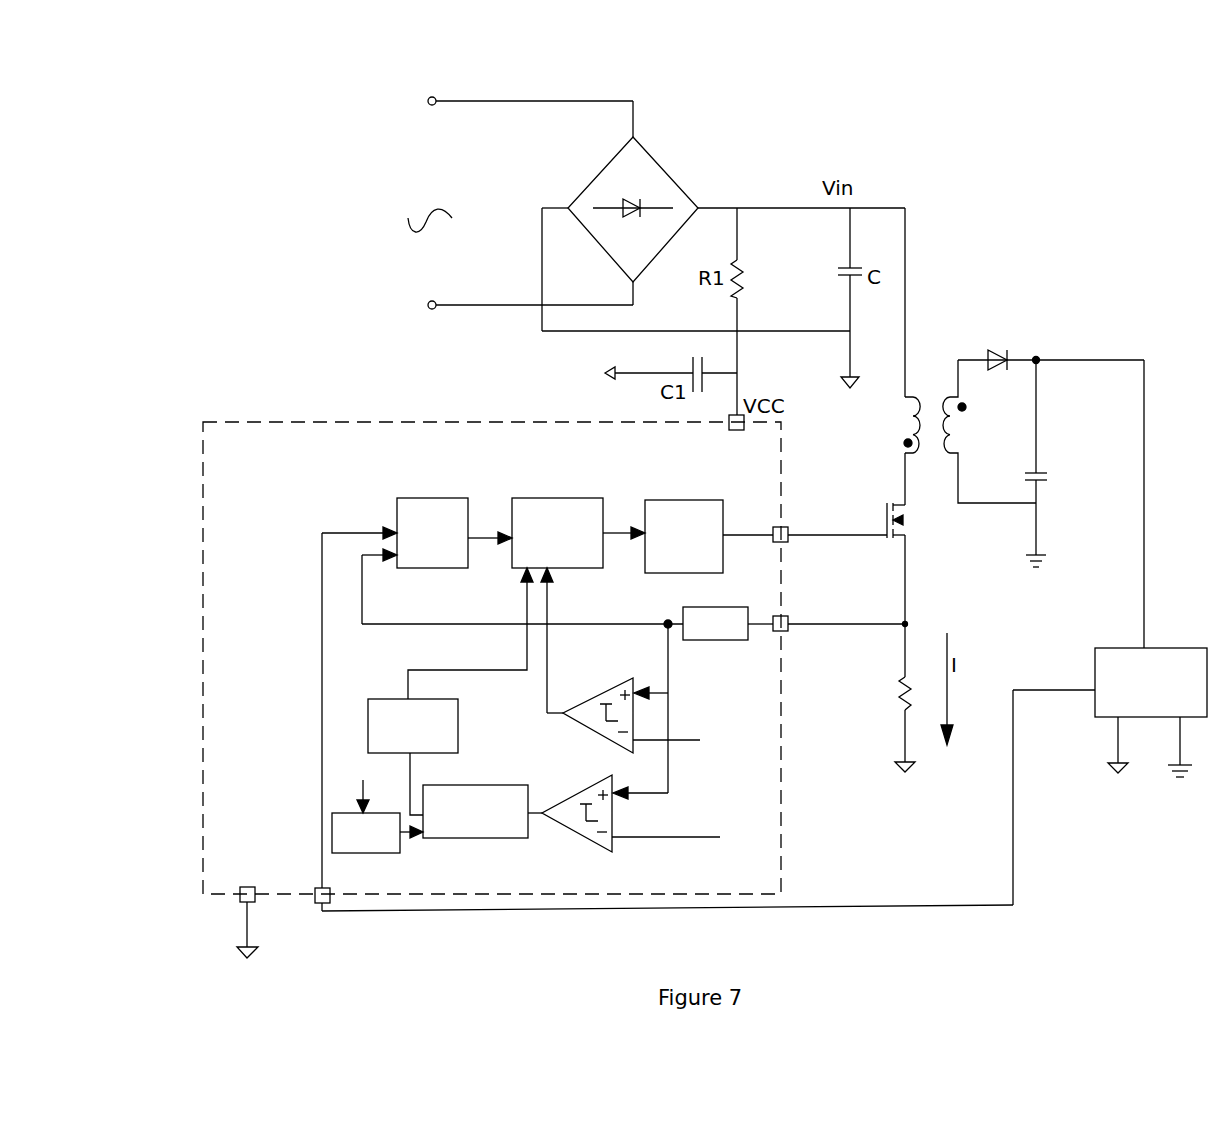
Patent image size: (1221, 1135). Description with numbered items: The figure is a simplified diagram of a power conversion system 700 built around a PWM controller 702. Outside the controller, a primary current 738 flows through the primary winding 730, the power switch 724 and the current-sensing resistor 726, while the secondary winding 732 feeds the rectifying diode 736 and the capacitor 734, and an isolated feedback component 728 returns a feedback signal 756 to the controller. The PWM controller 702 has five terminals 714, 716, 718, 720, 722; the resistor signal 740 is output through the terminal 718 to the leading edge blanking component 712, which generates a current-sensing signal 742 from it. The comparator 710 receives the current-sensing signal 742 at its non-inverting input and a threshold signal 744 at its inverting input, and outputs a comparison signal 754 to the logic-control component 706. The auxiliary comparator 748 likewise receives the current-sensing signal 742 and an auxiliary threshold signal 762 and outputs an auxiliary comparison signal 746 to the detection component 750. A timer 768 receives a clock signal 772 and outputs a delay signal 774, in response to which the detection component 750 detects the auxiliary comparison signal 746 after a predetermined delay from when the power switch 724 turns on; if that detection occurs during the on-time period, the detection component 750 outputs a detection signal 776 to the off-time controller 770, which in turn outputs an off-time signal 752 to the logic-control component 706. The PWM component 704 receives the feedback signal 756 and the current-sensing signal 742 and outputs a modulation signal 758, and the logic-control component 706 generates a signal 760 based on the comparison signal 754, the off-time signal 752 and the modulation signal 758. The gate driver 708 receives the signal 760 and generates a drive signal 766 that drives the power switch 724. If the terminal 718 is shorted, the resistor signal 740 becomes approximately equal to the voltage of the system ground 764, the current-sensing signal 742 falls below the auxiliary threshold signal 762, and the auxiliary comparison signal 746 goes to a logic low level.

The power conversion system 700 is at (308, 215).
The PWM controller 702 is at (226, 412).
The PWM component 704 is at (423, 499).
The logic-control component 706 is at (550, 497).
The gate driver 708 is at (703, 500).
The comparator 710 is at (619, 661).
The leading edge blanking (LEB) component 712 is at (713, 640).
The terminal 714 is at (735, 431).
The terminal 716 is at (788, 528).
The terminal 718 is at (788, 614).
The terminal 720 is at (315, 906).
The terminal 722 is at (250, 887).
The power switch 724 is at (910, 533).
The current-sensing resistor 726 is at (899, 706).
The isolated feedback component 728 is at (1168, 648).
The primary winding 730 is at (913, 395).
The secondary winding 732 is at (947, 453).
The capacitor 734 is at (1046, 472).
The rectifying diode 736 is at (993, 357).
The primary current 738 is at (905, 282).
The resistor signal 740 is at (788, 630).
The current-sensing signal 742 is at (668, 621).
The threshold signal 744 is at (681, 741).
The auxiliary comparison signal 746 is at (542, 807).
The auxiliary comparator 748 is at (567, 828).
The detection component 750 is at (507, 838).
The off-time signal 752 is at (452, 670).
The comparison signal 754 is at (548, 612).
The feedback signal 756 is at (322, 598).
The modulation signal 758 is at (482, 537).
The signal 760 is at (618, 532).
The auxiliary threshold signal 762 is at (700, 839).
The system ground 764 is at (900, 773).
The drive signal 766 is at (748, 537).
The timer 768 is at (370, 853).
The off-time controller 770 is at (372, 699).
The clock signal 772 is at (365, 779).
The delay signal 774 is at (412, 840).
The detection signal 776 is at (412, 780).